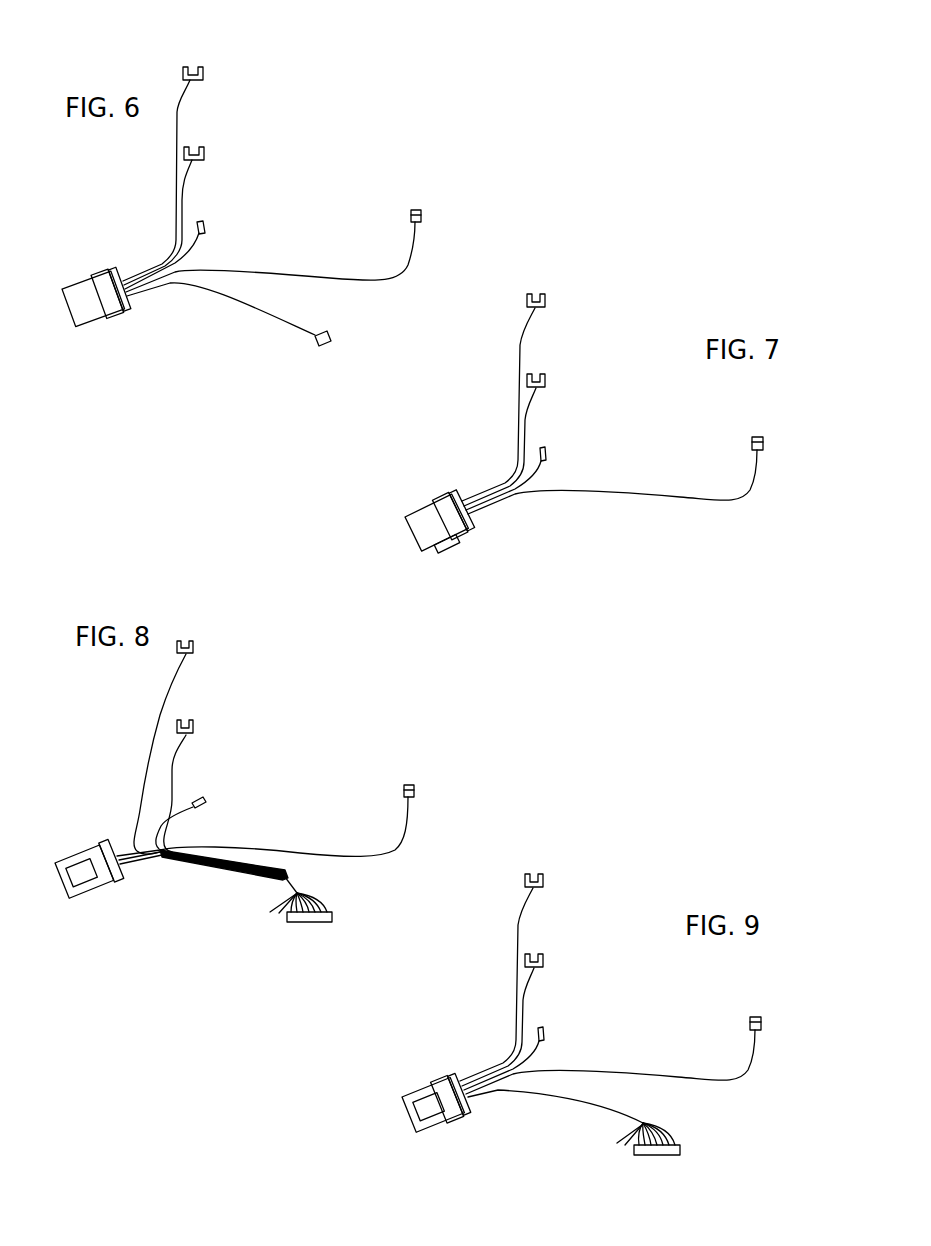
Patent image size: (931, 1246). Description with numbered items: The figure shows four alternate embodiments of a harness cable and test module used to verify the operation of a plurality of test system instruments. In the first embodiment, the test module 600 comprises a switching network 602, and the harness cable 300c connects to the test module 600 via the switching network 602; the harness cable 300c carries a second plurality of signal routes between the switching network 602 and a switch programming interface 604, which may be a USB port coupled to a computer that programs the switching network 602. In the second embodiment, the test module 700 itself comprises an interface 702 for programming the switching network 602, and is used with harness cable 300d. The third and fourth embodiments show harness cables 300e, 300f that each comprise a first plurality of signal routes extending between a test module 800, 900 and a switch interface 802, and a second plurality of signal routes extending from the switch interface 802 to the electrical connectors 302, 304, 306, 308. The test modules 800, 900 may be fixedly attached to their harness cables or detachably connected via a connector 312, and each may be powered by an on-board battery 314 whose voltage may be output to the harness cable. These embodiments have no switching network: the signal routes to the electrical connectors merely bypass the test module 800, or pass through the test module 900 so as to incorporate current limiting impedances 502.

In FIG. 6, the electrical connector 302 is at (203, 73).
In FIG. 7, the electrical connector 302 is at (545, 300).
In FIG. 8, the electrical connector 302 is at (193, 648).
In FIG. 9, the electrical connector 302 is at (538, 952).
In FIG. 6, the electrical connector 304 is at (204, 152).
In FIG. 7, the electrical connector 304 is at (545, 381).
In FIG. 8, the electrical connector 304 is at (193, 727).
In FIG. 9, the electrical connector 304 is at (539, 992).
In FIG. 6, the electrical connector 306 is at (205, 230).
In FIG. 7, the electrical connector 306 is at (547, 454).
In FIG. 8, the electrical connector 306 is at (204, 803).
In FIG. 9, the electrical connector 306 is at (546, 1058).
In FIG. 6, the electrical connector 308 is at (416, 210).
In FIG. 7, the electrical connector 308 is at (758, 437).
In FIG. 8, the electrical connector 308 is at (409, 785).
In FIG. 9, the electrical connector 308 is at (641, 1029).
In FIG. 6, the connector 312 is at (128, 301).
In FIG. 7, the connector 312 is at (471, 531).
In FIG. 8, the connector 312 is at (123, 880).
In FIG. 9, the connector 312 is at (468, 1123).
In FIG. 8, the on-board battery 314 is at (63, 878).
In FIG. 9, the on-board battery 314 is at (408, 1131).
In FIG. 6, the harness cable 300c is at (298, 194).
In FIG. 7, the harness cable 300d is at (640, 401).
In FIG. 8, the harness cable 300e is at (293, 771).
In FIG. 9, the harness cable 300f is at (638, 1002).
In FIG. 9, the current limiting impedances 502 is at (429, 1092).
In FIG. 6, the test module 600 is at (102, 318).
In FIG. 6, the switching network 602 is at (107, 286).
In FIG. 7, the switching network 602 is at (448, 512).
In FIG. 6, the switch programming interface 604 is at (322, 345).
In FIG. 7, the test module 700 is at (410, 537).
In FIG. 7, the interface 702 is at (452, 553).
In FIG. 8, the test module 800 is at (102, 890).
In FIG. 8, the switch interface 802 is at (276, 923).
In FIG. 9, the switch interface 802 is at (574, 1135).
In FIG. 9, the test module 900 is at (433, 1120).